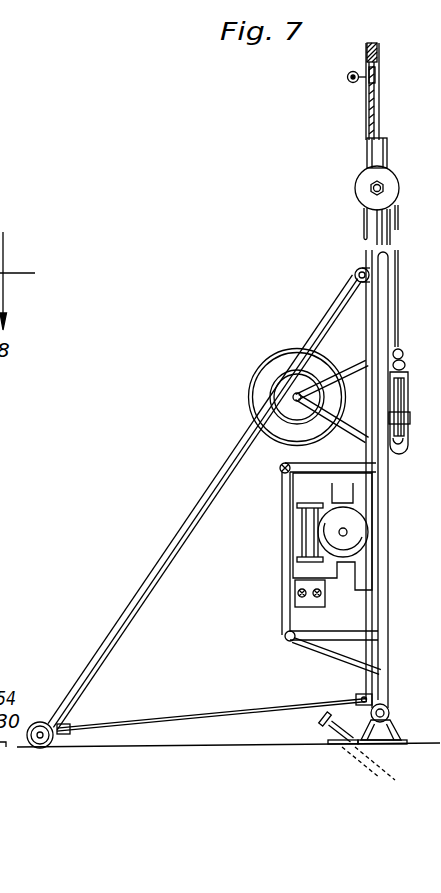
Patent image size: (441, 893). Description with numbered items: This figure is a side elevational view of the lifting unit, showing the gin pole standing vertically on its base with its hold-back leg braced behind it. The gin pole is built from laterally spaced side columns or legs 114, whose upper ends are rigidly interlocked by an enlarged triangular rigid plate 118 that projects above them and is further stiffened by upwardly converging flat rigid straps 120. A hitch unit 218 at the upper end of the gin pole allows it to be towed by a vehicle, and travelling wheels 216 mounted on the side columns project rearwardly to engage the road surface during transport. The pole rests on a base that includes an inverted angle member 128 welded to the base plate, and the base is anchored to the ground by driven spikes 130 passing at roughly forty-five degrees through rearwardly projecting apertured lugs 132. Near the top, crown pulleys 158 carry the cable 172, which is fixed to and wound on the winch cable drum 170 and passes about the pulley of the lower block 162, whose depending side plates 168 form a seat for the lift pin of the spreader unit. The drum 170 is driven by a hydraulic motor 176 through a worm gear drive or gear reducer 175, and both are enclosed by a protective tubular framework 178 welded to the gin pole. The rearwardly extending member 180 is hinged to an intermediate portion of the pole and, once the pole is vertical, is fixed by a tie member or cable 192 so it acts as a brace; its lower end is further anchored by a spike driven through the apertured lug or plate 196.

The upwardly converging flat rigid straps 120 is at (378, 57).
The triangular rigid plate 118 is at (368, 110).
The hitch unit 218 is at (347, 80).
The crown pulleys 158 is at (390, 178).
The side columns or legs 114 is at (377, 222).
The cable 172 is at (400, 263).
The rearwardly extending member 180 is at (146, 551).
The travelling wheels 216 is at (253, 392).
The depending side plates 168 is at (392, 450).
The lower block 162 is at (416, 431).
The protective tubular framework 178 is at (276, 620).
The hydraulic motor 176 is at (298, 592).
The worm gear drive or gear reducer 175 is at (308, 527).
The winch cable drum 170 is at (360, 538).
The tie member or cable 192 is at (227, 713).
The apertured lug or plate 196 is at (18, 747).
The inverted angle member 128 is at (388, 722).
The driven spikes 130 is at (327, 731).
The apertured lugs 132 is at (333, 746).